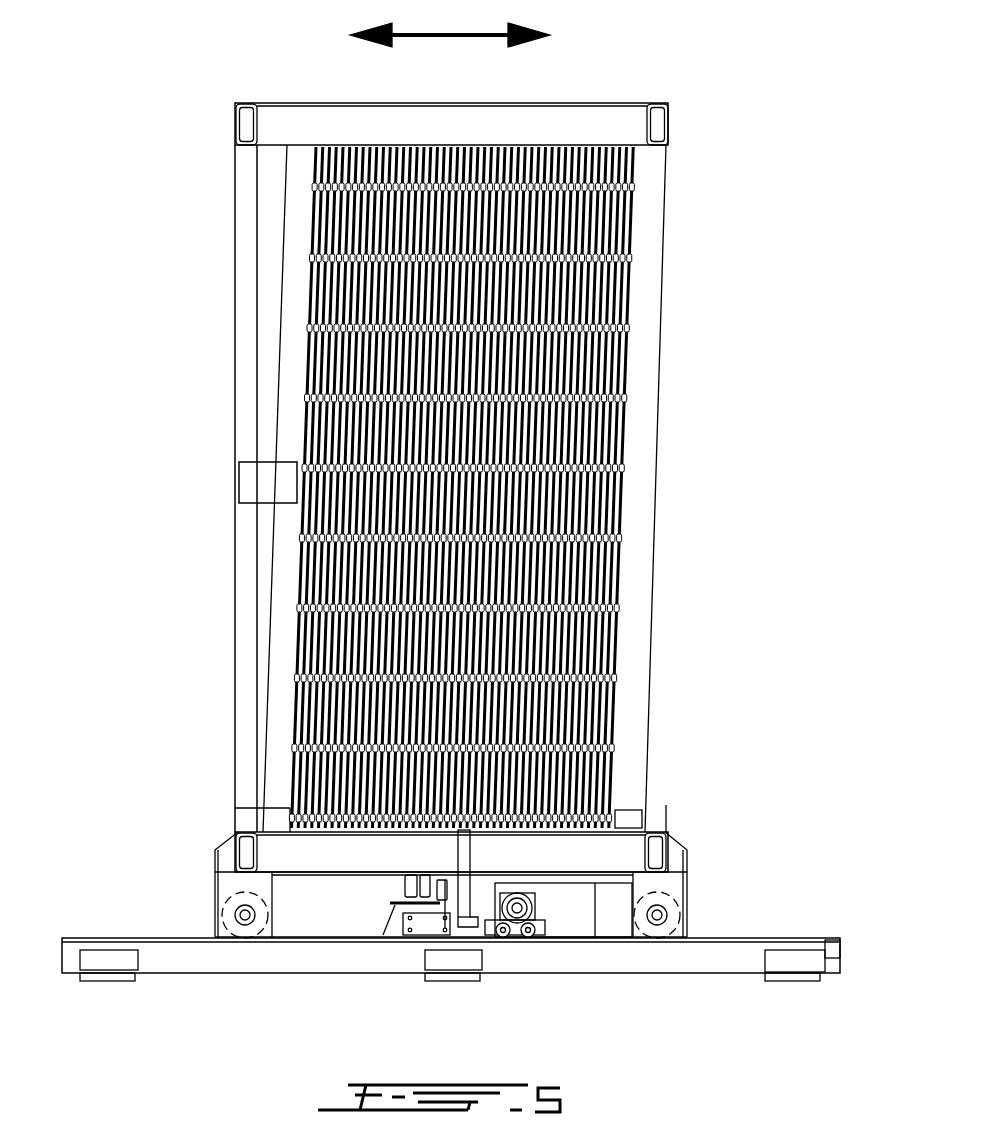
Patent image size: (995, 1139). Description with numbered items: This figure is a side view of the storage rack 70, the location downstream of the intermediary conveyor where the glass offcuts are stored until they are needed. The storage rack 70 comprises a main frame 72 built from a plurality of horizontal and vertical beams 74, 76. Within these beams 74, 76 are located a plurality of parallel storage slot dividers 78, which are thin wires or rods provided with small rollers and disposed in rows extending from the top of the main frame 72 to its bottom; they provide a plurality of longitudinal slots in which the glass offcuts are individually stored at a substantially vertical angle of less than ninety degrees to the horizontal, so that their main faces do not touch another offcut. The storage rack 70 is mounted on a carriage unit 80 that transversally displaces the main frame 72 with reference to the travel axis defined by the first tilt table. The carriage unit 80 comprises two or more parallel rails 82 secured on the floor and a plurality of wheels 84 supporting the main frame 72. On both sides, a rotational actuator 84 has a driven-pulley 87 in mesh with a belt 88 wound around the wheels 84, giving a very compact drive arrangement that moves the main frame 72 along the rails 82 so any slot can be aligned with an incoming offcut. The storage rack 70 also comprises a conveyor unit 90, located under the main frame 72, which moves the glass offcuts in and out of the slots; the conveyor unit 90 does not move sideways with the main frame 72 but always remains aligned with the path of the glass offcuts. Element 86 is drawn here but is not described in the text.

The storage rack 70 is at (170, 163).
The main frame 72 is at (228, 810).
The horizontal beam 74 is at (636, 648).
The vertical beam 76 is at (585, 122).
The storage slot dividers 78 is at (627, 398).
The carriage unit 80 is at (733, 910).
The rails 82 is at (795, 940).
The wheels 84 is at (215, 895).
The locking bar 86 is at (473, 917).
The driven-pulley 87 is at (517, 925).
The belt 88 is at (565, 940).
The conveyor unit 90 is at (355, 910).